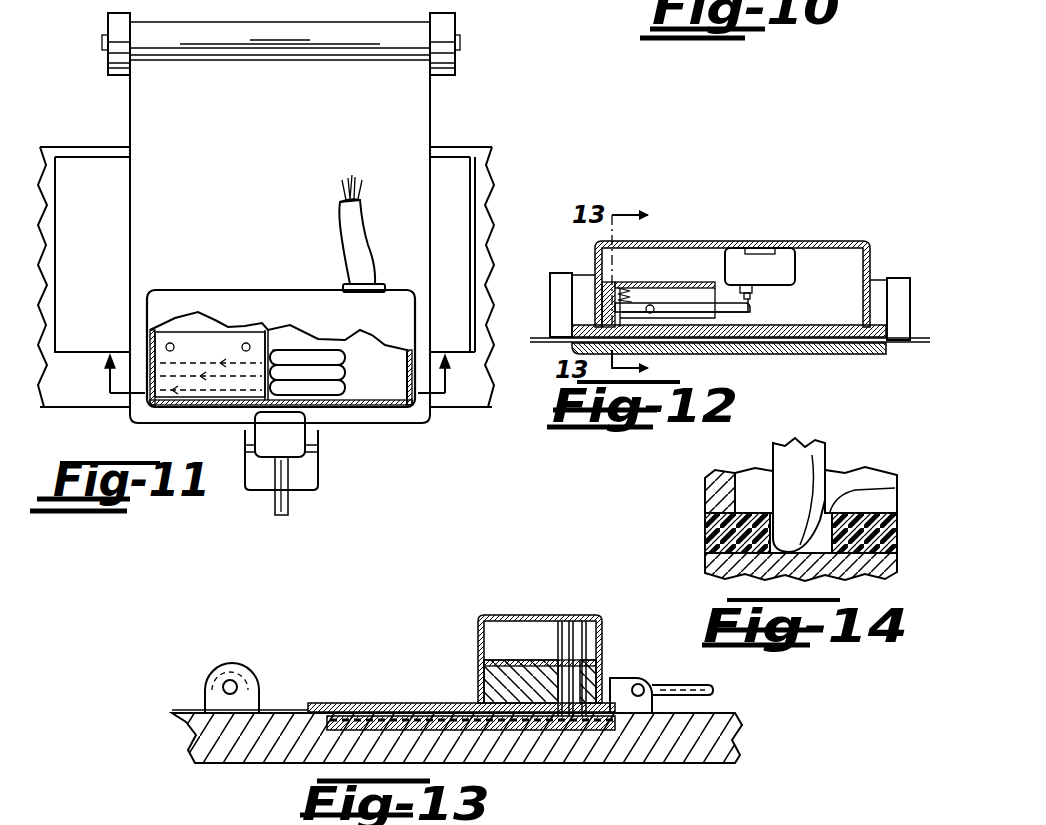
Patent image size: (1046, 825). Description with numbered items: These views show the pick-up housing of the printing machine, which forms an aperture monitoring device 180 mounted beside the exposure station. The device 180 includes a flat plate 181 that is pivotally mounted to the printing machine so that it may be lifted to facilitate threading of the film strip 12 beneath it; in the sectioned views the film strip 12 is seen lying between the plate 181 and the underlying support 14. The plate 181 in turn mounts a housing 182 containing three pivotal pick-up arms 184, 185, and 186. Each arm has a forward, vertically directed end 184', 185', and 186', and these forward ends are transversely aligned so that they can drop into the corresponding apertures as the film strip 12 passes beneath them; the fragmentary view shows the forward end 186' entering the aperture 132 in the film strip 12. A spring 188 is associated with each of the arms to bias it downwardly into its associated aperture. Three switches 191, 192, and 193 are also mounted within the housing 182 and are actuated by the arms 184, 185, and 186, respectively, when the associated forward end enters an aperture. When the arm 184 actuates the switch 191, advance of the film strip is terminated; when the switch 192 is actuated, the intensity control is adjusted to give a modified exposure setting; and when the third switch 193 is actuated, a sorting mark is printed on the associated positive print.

In FIG. 11, the film strip 12 is at (78, 146).
In FIG. 12, the film strip 12 is at (533, 334).
In FIG. 13, the film strip 12 is at (426, 711).
In FIG. 14, the film strip 12 is at (703, 532).
In FIG. 13, the base 14 is at (738, 722).
In FIG. 14, the base 14 is at (718, 575).
In FIG. 12, the aperture 132 is at (560, 343).
In FIG. 14, the aperture 132 is at (890, 492).
In FIG. 11, the aperture monitoring device 180 is at (298, 290).
In FIG. 12, the aperture monitoring device 180 is at (722, 240).
In FIG. 13, the aperture monitoring device 180 is at (476, 620).
In FIG. 11, the flat plate 181 is at (282, 200).
In FIG. 12, the flat plate 181 is at (880, 302).
In FIG. 13, the flat plate 181 is at (398, 703).
In FIG. 14, the flat plate 181 is at (705, 490).
In FIG. 11, the housing 182 is at (262, 290).
In FIG. 12, the housing 182 is at (652, 246).
In FIG. 13, the housing 182 is at (490, 615).
In FIG. 11, the pick-up arm 184 is at (306, 328).
In FIG. 11, the pick-up arm 185 is at (211, 405).
In FIG. 11, the pick-up arm 186 is at (192, 392).
In FIG. 12, the pick-up arm 186 is at (729, 346).
In FIG. 12, the spring 188 is at (634, 292).
In FIG. 11, the switch 191 is at (338, 355).
In FIG. 13, the switch 191 is at (560, 621).
In FIG. 11, the switch 192 is at (352, 372).
In FIG. 13, the switch 192 is at (571, 621).
In FIG. 11, the switch 193 is at (335, 395).
In FIG. 12, the switch 193 is at (782, 258).
In FIG. 13, the switch 193 is at (590, 608).
In FIG. 13, the forward end 184' is at (537, 764).
In FIG. 13, the forward end 185' is at (542, 776).
In FIG. 13, the forward end 186' is at (610, 764).
In FIG. 14, the forward end 186' is at (837, 493).